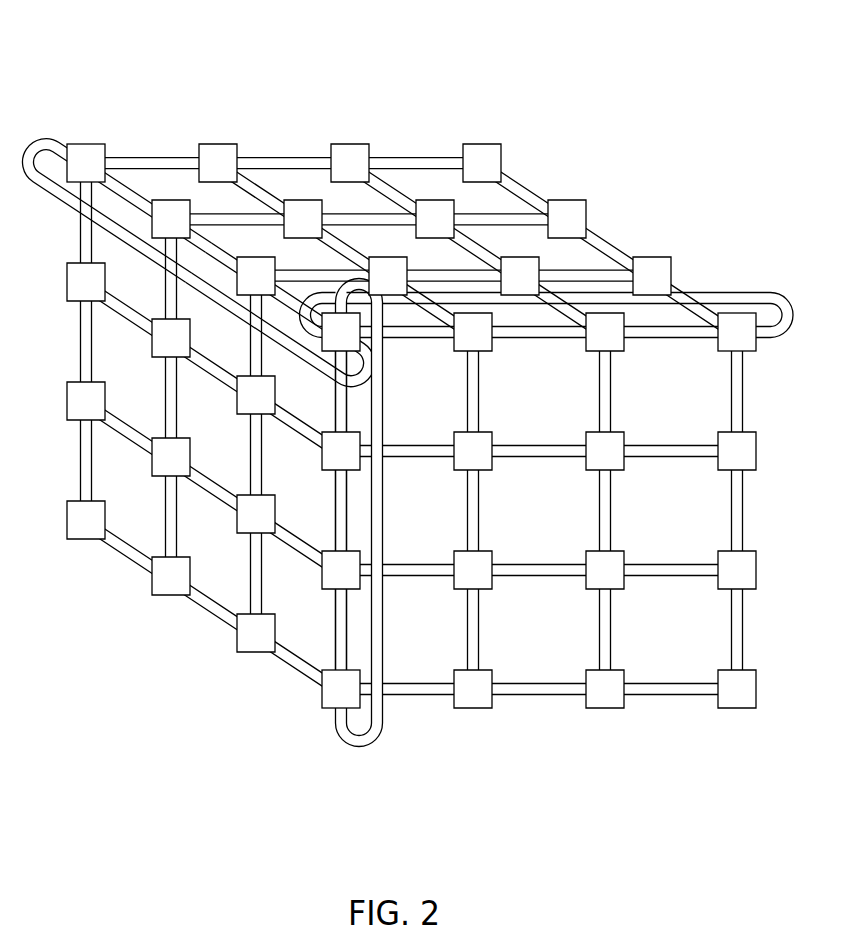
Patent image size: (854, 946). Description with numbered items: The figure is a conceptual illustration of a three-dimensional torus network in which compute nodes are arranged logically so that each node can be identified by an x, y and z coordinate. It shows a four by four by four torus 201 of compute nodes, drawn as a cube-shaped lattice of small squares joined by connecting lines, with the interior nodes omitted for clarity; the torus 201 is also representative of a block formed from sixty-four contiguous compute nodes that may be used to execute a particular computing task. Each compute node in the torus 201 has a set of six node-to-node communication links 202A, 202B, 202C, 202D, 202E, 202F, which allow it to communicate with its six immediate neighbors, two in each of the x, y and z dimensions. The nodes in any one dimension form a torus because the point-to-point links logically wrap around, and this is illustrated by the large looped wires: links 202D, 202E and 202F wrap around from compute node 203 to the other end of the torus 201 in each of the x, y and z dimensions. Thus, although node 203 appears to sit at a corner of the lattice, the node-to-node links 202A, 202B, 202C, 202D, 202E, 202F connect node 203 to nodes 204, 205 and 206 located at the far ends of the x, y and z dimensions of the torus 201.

The torus 201 is at (413, 401).
The node-to-node communication link 202A is at (400, 338).
The node-to-node communication link 202B is at (348, 410).
The node-to-node communication link 202C is at (299, 315).
The node-to-node communication link 202D is at (762, 292).
The node-to-node communication link 202E is at (359, 748).
The node-to-node communication link 202F is at (40, 140).
The compute node 203 is at (322, 347).
The compute node 204 is at (94, 146).
The compute node 205 is at (750, 341).
The compute node 206 is at (326, 698).